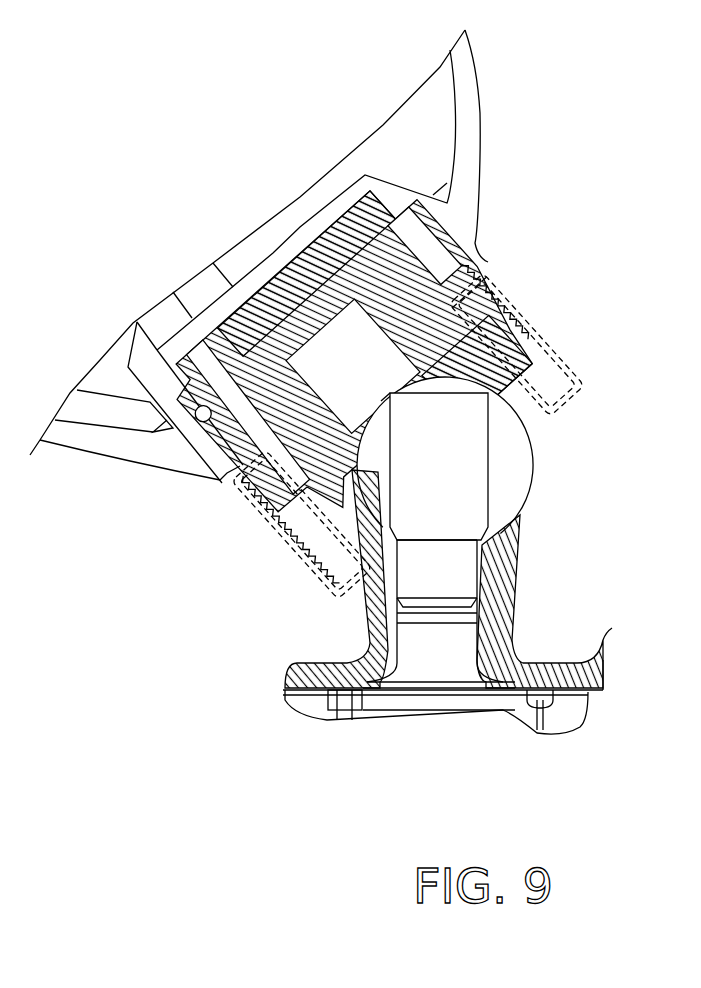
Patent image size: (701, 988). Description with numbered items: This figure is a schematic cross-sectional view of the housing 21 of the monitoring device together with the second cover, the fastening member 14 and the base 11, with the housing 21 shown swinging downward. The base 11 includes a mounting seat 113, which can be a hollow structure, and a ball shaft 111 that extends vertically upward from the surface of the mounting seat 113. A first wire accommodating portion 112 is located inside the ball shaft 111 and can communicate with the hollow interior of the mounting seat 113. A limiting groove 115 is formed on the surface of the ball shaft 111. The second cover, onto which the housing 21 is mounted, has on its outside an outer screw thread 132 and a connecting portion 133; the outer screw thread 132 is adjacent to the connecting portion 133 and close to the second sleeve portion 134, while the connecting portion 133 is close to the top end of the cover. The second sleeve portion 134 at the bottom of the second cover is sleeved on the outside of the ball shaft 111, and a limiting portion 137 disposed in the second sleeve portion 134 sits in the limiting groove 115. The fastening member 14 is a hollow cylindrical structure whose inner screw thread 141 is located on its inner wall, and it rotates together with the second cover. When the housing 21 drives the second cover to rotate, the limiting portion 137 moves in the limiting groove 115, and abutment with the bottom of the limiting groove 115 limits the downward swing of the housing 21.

The housing 21 is at (470, 112).
The connecting portion 133 is at (307, 273).
The outer screw thread 132 is at (354, 364).
The inner screw thread 141 is at (469, 292).
The fastening member 14 is at (510, 337).
The second sleeve portion 134 is at (477, 369).
The limiting groove 115 is at (381, 448).
The ball shaft 111 is at (530, 480).
The first wire accommodating portion 112 is at (450, 590).
The limiting portion 137 is at (302, 524).
The base 11 is at (297, 663).
The mounting seat 113 is at (608, 650).